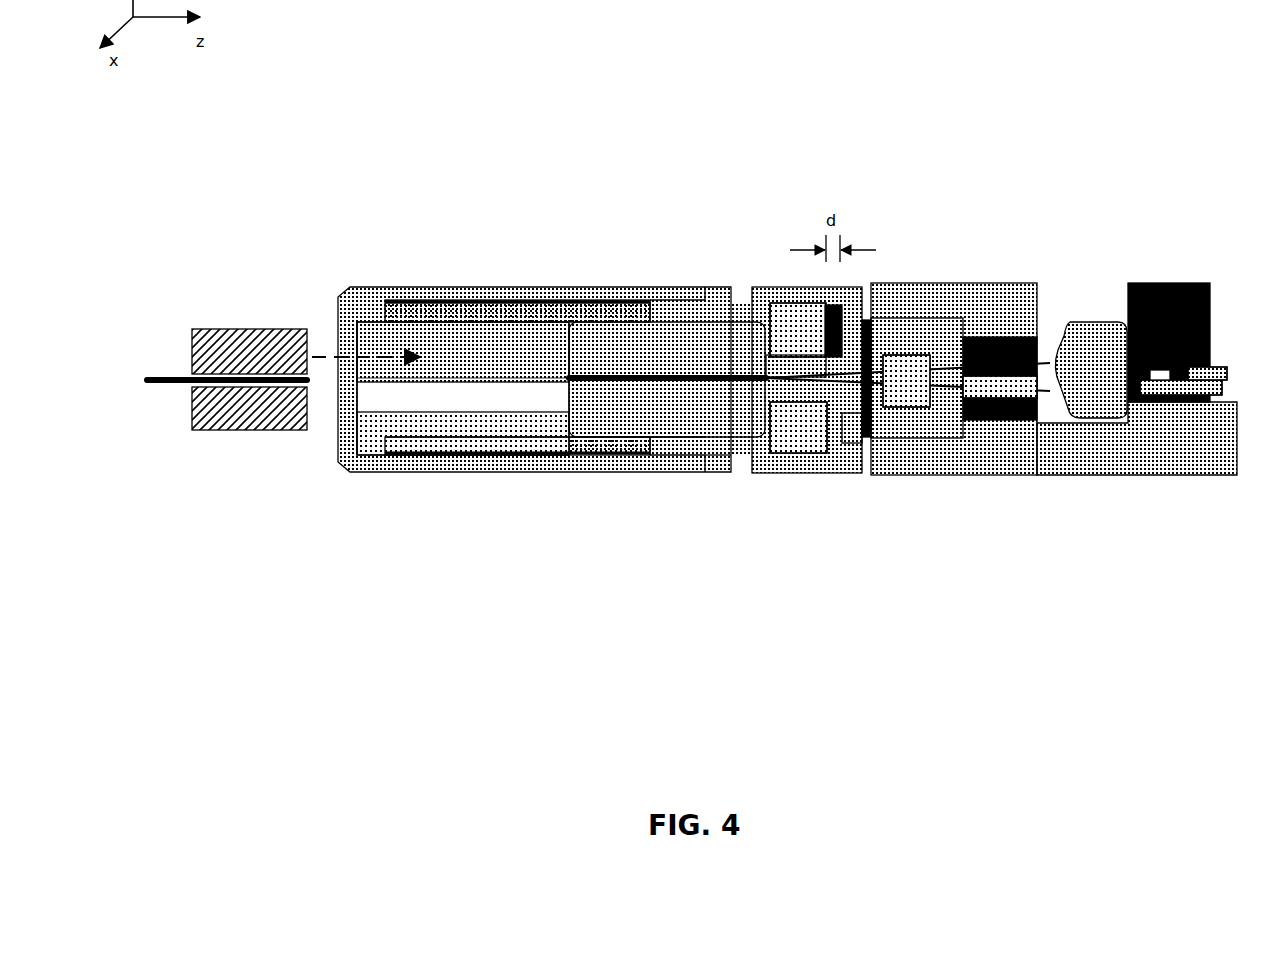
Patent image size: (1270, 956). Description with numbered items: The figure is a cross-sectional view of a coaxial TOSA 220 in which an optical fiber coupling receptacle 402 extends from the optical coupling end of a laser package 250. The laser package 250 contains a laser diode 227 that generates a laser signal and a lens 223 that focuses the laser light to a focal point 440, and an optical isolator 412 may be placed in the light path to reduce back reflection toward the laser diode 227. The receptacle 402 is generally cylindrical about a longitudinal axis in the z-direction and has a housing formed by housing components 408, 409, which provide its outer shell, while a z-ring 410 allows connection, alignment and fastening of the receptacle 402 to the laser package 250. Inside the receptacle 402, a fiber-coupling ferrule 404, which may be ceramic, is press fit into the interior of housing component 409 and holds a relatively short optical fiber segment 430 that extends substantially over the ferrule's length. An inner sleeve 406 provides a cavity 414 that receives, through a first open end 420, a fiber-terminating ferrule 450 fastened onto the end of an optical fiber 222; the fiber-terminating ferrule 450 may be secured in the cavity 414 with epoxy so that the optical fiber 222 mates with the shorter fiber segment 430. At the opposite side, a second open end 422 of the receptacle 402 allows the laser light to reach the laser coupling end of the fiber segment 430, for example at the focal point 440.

The coaxial TOSA 220 is at (700, 58).
The optical fiber 222 is at (163, 378).
The lens 223 is at (1087, 367).
The laser diode 227 is at (1152, 372).
The laser package 250 is at (1000, 245).
The optical fiber coupling receptacle 402 is at (521, 252).
The fiber-coupling ferrule 404 is at (670, 410).
The inner sleeve 406 is at (440, 320).
The housing component 408 is at (540, 460).
The housing component 409 is at (718, 456).
The z-ring 410 is at (848, 462).
The optical isolator 412 is at (915, 400).
The cavity 414 is at (430, 400).
The first open end 420 is at (357, 417).
The second open end 422 is at (795, 350).
The optical fiber segment 430 is at (620, 374).
The focal point 440 is at (774, 392).
The fiber-terminating ferrule 450 is at (254, 328).